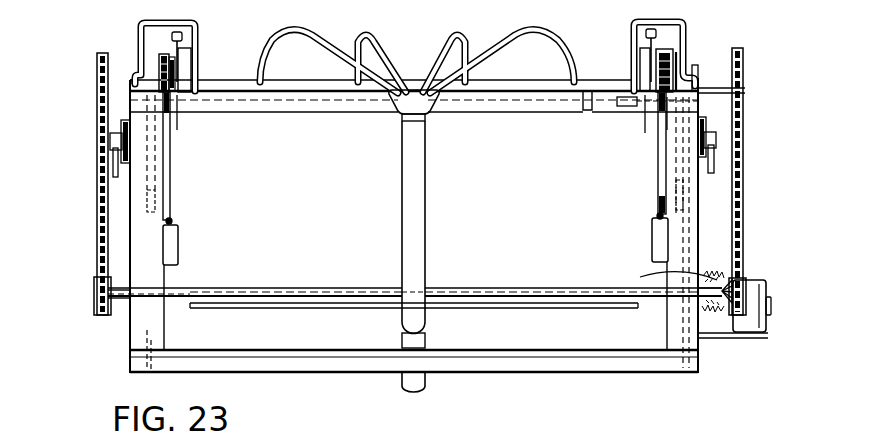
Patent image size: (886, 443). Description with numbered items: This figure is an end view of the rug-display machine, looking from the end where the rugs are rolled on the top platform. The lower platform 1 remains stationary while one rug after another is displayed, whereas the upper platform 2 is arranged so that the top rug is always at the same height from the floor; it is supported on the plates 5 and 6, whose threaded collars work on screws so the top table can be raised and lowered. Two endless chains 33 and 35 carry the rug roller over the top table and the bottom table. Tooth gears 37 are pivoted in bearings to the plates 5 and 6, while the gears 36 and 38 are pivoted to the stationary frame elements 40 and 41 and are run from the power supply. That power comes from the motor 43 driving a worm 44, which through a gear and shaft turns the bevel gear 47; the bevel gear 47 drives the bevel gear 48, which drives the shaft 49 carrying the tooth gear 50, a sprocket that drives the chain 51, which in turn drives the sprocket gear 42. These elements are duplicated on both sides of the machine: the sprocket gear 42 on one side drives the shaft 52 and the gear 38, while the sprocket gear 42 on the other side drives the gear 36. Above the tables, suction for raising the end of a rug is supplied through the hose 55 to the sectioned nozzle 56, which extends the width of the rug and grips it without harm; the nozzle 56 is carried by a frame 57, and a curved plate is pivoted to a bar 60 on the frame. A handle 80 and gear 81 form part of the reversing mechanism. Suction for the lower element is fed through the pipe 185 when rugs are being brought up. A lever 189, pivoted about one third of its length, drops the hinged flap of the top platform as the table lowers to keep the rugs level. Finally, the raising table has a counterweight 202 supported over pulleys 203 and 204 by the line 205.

The lower platform 1 is at (520, 304).
The upper platform 2 is at (585, 110).
The plate 5 is at (150, 204).
The plate 6 is at (683, 196).
The chain 33 is at (673, 57).
The chain 35 is at (158, 55).
The gear 36 is at (159, 70).
The tooth gear 37 is at (163, 222).
The gear 38 is at (680, 63).
The stationary frame element 40 is at (133, 82).
The stationary frame element 41 is at (697, 83).
The sprocket gear 42 is at (97, 112).
The motor 43 is at (771, 320).
The worm 44 is at (718, 312).
The bevel gear 47 is at (662, 268).
The bevel gear 48 is at (727, 282).
The shaft 49 is at (452, 289).
The tooth gear 50 is at (97, 285).
The chain 51 is at (99, 160).
The shaft 52 is at (720, 93).
The hose 55 is at (522, 37).
The nozzle 56 is at (548, 78).
The frame 57 is at (199, 30).
The bar 60 is at (192, 58).
The handle 80 is at (113, 170).
The gear 81 is at (121, 128).
The pipe 185 is at (426, 214).
The lever 189 is at (623, 107).
The counterweight 202 is at (179, 232).
The pulley 203 is at (171, 46).
The pulley 204 is at (175, 47).
The line 205 is at (171, 167).